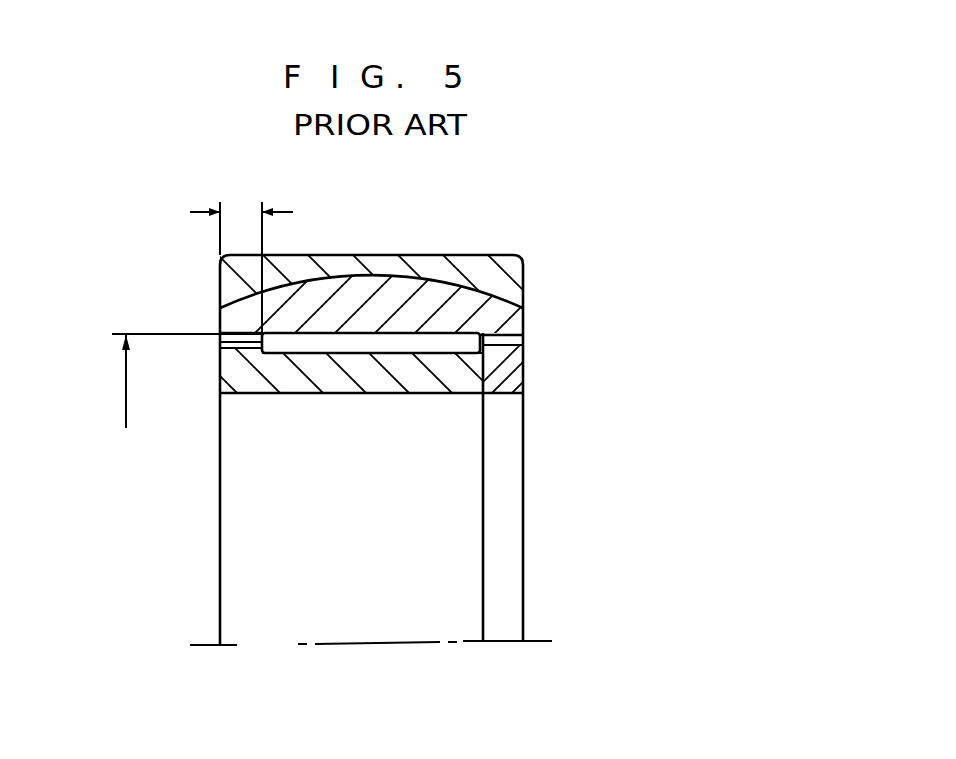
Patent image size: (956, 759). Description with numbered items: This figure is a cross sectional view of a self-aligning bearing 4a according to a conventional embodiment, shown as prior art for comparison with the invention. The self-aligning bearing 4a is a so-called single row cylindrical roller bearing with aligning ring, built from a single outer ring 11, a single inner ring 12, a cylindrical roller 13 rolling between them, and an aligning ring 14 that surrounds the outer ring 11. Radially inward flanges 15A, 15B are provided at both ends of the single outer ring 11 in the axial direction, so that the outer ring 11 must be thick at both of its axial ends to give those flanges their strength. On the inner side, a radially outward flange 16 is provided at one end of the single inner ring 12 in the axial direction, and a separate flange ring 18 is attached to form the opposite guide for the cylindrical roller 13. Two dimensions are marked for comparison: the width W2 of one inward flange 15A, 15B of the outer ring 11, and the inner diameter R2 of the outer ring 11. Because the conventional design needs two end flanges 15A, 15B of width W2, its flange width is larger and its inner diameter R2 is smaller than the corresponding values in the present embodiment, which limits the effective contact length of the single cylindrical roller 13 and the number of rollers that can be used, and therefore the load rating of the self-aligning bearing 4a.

The self-aligning bearing 4a is at (521, 254).
The outer ring 11 is at (358, 292).
The inner ring 12 is at (394, 378).
The cylindrical roller 13 is at (332, 346).
The aligning ring 14 is at (413, 270).
The radially inward flange 15A is at (218, 342).
The radially inward flange 15B is at (508, 331).
The radially outward flange 16 is at (226, 358).
The flange ring 18 is at (516, 376).
The width of the flange W2 is at (241, 254).
The inner diameter of the outer ring R2 is at (182, 398).